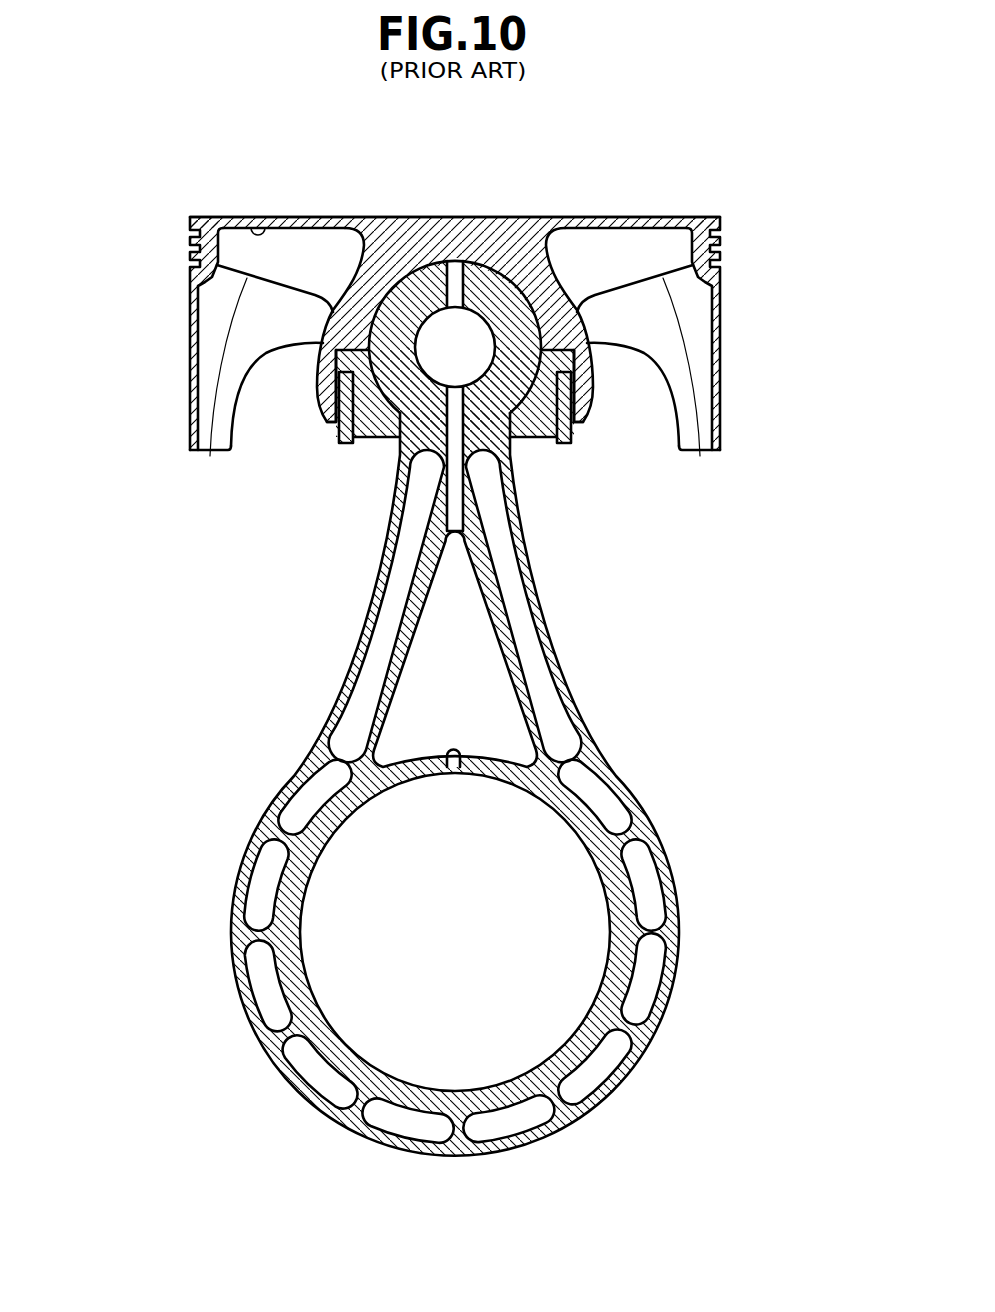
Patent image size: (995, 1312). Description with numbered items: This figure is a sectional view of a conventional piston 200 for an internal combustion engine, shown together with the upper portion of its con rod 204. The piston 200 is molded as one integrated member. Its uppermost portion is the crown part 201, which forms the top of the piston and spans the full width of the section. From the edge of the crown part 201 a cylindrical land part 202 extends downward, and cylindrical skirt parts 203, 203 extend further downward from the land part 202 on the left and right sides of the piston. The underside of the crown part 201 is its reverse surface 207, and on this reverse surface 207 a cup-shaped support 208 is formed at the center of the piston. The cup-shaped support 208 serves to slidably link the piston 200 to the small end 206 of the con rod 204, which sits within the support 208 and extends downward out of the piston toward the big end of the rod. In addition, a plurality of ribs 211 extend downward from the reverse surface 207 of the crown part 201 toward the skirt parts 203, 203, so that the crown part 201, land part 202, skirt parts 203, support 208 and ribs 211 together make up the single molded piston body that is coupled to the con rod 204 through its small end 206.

The piston 200 is at (467, 297).
The crown part 201 is at (386, 362).
The cylindrical land part 202 is at (728, 214).
The cylindrical skirt part 203 is at (187, 373).
The con rod 204 is at (402, 651).
The small end 206 is at (398, 374).
The reverse surface 207 is at (254, 228).
The cup-shaped support 208 is at (568, 278).
The rib 211 is at (210, 456).